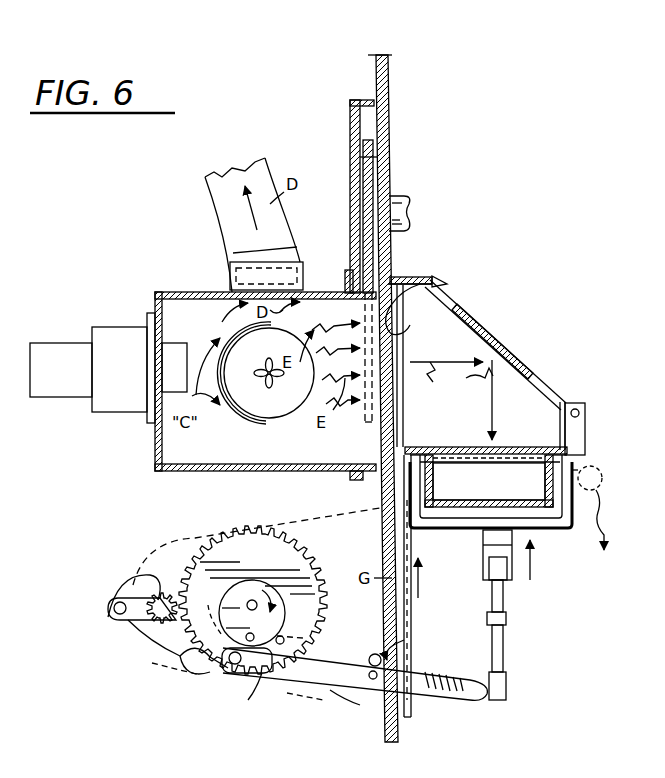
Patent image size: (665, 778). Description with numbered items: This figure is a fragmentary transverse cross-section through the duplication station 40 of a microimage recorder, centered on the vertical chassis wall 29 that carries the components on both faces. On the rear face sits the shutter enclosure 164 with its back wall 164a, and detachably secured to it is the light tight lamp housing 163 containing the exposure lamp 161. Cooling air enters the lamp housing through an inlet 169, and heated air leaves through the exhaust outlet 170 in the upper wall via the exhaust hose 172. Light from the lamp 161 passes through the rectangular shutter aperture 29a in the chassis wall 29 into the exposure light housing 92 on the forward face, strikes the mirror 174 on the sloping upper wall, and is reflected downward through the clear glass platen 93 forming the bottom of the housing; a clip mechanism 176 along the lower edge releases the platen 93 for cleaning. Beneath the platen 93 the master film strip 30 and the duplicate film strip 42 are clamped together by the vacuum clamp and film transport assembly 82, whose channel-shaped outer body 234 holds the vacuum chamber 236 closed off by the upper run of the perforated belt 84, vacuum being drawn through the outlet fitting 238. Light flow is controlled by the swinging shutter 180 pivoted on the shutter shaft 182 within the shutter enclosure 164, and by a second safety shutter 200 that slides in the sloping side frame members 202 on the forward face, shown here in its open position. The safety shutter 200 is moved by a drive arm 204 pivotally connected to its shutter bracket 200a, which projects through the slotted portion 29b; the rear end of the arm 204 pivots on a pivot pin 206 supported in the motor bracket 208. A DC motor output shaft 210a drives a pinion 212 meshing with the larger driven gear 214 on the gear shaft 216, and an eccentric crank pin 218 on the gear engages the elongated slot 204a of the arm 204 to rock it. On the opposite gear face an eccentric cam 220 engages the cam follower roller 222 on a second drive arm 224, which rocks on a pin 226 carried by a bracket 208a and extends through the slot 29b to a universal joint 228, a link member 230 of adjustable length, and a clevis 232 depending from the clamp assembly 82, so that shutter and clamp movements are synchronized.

The chassis wall 29 is at (388, 62).
The shutter aperture 29a is at (446, 281).
The slotted portion 29b is at (372, 690).
The master film strip 30 is at (462, 445).
The duplication station 40 is at (497, 312).
The duplicate film strip 42 is at (514, 445).
The vacuum clamp and film transport assembly 82 is at (513, 601).
The perforated belt 84 is at (438, 530).
The exposure light housing 92 is at (432, 272).
The glass platen 93 is at (434, 445).
The exposure lamp 161 is at (286, 422).
The lamp housing 163 is at (150, 468).
The shutter enclosure 164 is at (348, 136).
The back wall 164a is at (346, 220).
The inlet 169 is at (166, 395).
The exhaust outlet 170 is at (258, 268).
The exhaust hose 172 is at (218, 212).
The mirror 174 is at (488, 332).
The clip mechanism 176 is at (586, 424).
The swinging shutter 180 is at (372, 160).
The shutter shaft 182 is at (388, 198).
The safety shutter 200 is at (412, 616).
The shutter bracket 200a is at (385, 650).
The side frame members 202 is at (412, 642).
The drive arm 204 is at (328, 635).
The elongated slot 204a is at (204, 605).
The pivot pin 206 is at (108, 612).
The motor bracket 208 is at (168, 540).
The bracket 208a is at (350, 712).
The output shaft 210a is at (150, 622).
The pinion 212 is at (130, 578).
The driven gear 214 is at (165, 657).
The gear shaft 216 is at (253, 600).
The eccentric crank pin 218 is at (269, 613).
The eccentric cam 220 is at (276, 684).
The cam follower roller 222 is at (200, 676).
The drive arm 224 is at (455, 700).
The pin 226 is at (345, 700).
The universal joint 228 is at (506, 686).
The link member 230 is at (506, 650).
The clevis 232 is at (478, 548).
The outer body 234 is at (585, 528).
The vacuum chamber 236 is at (503, 494).
The outlet fitting 238 is at (600, 470).